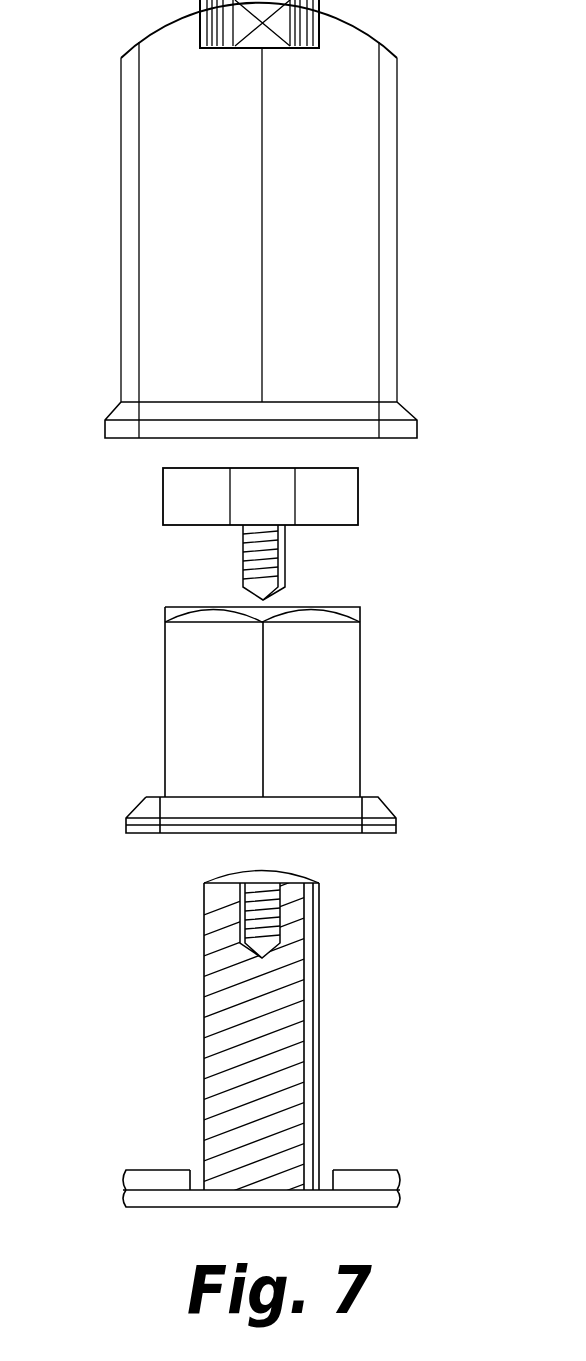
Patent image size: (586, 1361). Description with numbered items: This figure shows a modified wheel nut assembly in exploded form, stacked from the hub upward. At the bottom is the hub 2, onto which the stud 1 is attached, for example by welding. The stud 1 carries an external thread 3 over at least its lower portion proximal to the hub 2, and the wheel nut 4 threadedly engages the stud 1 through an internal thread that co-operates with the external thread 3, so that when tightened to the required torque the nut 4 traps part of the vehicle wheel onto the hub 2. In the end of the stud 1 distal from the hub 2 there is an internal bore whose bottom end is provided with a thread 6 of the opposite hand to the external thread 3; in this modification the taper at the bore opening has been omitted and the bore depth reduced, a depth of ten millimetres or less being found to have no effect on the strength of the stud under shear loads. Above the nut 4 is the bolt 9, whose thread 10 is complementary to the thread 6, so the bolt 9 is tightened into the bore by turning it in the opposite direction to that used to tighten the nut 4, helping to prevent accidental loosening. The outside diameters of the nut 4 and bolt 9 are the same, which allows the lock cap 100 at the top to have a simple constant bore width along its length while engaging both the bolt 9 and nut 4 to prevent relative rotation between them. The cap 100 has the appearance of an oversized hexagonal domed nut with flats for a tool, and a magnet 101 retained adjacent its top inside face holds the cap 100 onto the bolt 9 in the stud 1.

The cap 100 is at (397, 280).
The magnet 101 is at (237, 27).
The bolt 9 is at (358, 512).
The thread 10 is at (243, 565).
The wheel nut 4 is at (165, 720).
The stud 1 is at (204, 1080).
The external thread 3 is at (319, 1075).
The thread 6 is at (319, 952).
The hub 2 is at (385, 1170).